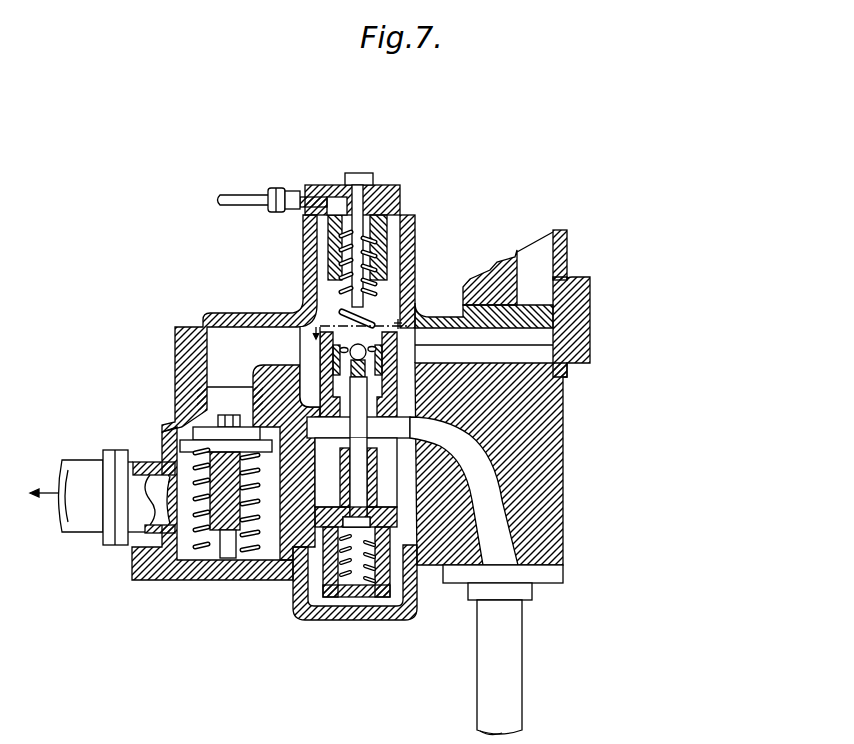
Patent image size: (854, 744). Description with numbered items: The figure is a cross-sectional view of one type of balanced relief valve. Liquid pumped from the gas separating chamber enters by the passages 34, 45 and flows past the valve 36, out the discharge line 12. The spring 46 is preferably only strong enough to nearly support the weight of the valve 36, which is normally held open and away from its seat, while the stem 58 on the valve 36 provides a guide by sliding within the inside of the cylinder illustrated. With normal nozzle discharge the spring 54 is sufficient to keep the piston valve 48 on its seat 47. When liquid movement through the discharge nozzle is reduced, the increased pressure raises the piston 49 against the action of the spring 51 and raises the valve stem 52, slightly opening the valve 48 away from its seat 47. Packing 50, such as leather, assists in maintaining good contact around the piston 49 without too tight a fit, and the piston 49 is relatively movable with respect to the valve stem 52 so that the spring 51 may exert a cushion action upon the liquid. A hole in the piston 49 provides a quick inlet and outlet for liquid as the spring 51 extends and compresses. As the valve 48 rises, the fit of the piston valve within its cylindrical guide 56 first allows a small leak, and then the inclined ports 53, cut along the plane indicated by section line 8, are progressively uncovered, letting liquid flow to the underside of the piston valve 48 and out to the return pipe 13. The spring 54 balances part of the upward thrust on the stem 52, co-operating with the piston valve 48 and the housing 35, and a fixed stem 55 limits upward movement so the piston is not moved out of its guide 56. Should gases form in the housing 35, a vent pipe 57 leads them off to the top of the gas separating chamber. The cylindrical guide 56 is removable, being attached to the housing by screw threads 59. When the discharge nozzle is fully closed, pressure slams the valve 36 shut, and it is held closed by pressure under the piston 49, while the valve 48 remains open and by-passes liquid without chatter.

The section line 8- 8 is at (358, 323).
The discharge line 12 is at (75, 468).
The return pipe 13 is at (500, 657).
The passage 34 is at (535, 272).
The housing 35 is at (412, 260).
The valve 36 is at (205, 434).
The passage 45 is at (230, 380).
The spring 46 is at (197, 525).
The seat 47 is at (322, 380).
The piston valve 48 is at (387, 352).
The piston 49 is at (323, 505).
The packing 50 is at (293, 562).
The spring 51 is at (360, 576).
The valve stem 52 is at (358, 435).
The ports 53 is at (322, 352).
The spring 54 is at (372, 292).
The fixed stem 55 is at (352, 298).
The cylindrical guide 56 is at (340, 313).
The vent pipe 57 is at (232, 193).
The stem 58 is at (227, 515).
The screw threads 59 is at (392, 398).